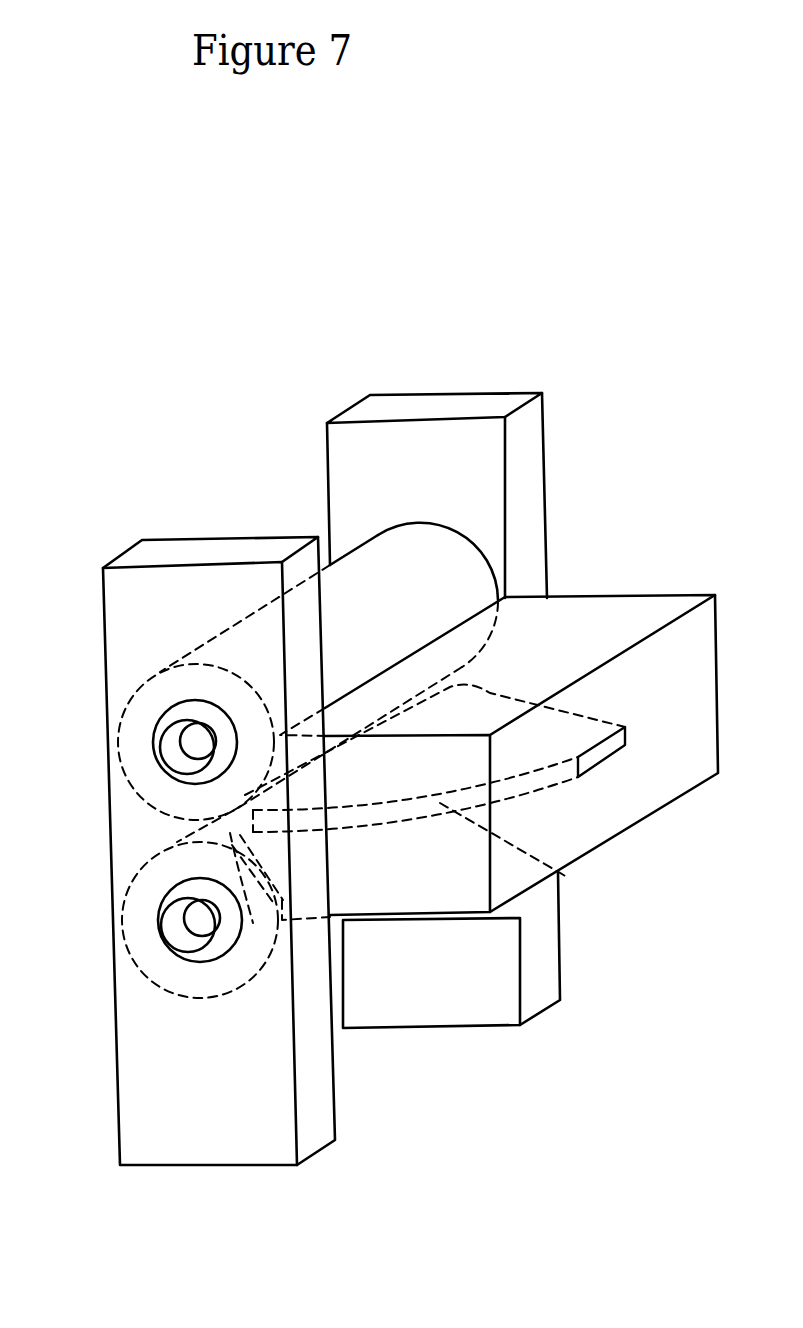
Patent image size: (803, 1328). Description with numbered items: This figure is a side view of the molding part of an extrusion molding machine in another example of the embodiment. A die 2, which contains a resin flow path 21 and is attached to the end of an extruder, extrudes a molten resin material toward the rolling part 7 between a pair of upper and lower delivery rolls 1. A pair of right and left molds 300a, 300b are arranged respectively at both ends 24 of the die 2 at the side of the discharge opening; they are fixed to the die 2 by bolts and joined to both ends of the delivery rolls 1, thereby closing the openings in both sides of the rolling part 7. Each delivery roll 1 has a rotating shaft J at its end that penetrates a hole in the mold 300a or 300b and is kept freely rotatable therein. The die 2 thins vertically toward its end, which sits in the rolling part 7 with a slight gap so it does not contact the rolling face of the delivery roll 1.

The mold 300a is at (172, 557).
The mold 300b is at (370, 413).
The delivery roll 1 is at (442, 555).
The die 2 is at (617, 610).
The resin flow path 21 is at (560, 875).
The end of the die 24 is at (285, 848).
The rolling part 7 is at (270, 967).
The rotating shaft J is at (178, 738).